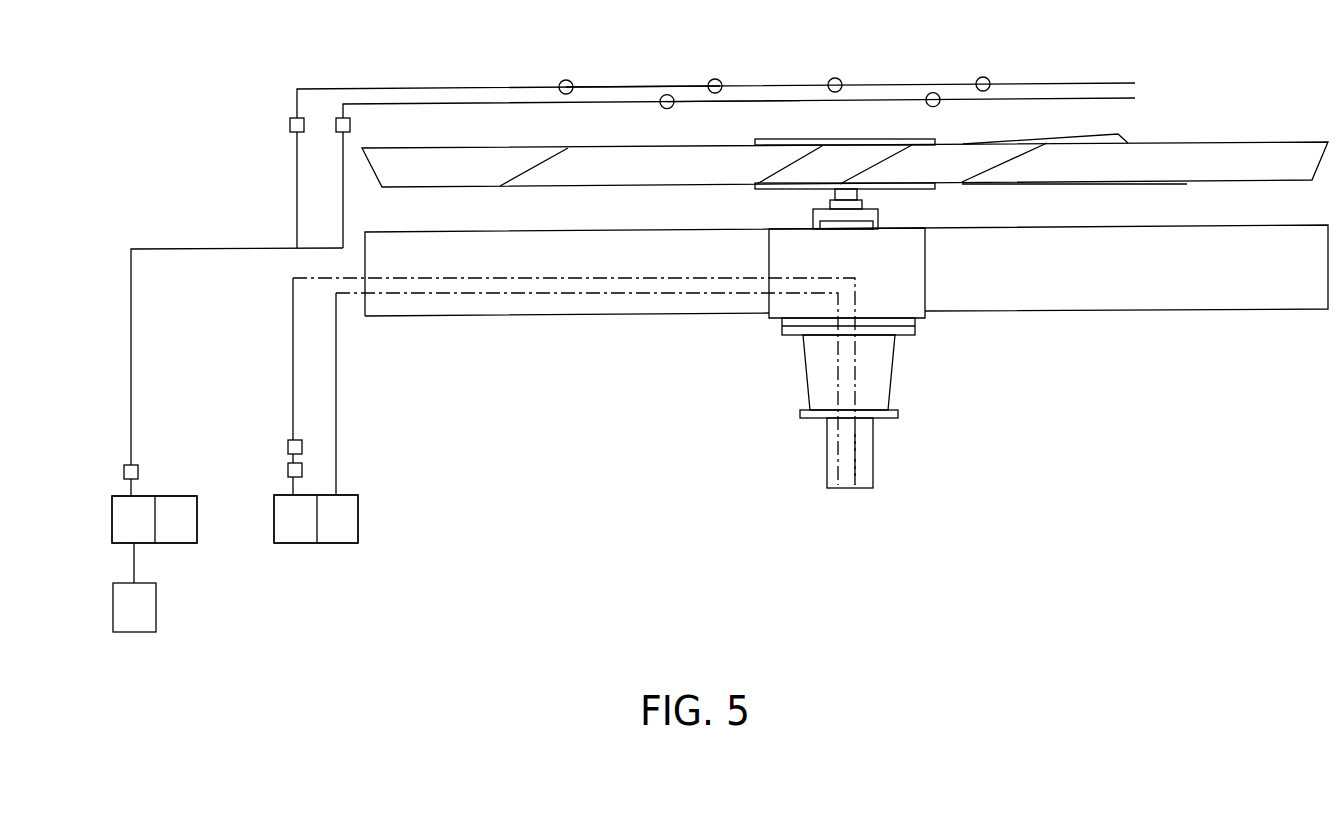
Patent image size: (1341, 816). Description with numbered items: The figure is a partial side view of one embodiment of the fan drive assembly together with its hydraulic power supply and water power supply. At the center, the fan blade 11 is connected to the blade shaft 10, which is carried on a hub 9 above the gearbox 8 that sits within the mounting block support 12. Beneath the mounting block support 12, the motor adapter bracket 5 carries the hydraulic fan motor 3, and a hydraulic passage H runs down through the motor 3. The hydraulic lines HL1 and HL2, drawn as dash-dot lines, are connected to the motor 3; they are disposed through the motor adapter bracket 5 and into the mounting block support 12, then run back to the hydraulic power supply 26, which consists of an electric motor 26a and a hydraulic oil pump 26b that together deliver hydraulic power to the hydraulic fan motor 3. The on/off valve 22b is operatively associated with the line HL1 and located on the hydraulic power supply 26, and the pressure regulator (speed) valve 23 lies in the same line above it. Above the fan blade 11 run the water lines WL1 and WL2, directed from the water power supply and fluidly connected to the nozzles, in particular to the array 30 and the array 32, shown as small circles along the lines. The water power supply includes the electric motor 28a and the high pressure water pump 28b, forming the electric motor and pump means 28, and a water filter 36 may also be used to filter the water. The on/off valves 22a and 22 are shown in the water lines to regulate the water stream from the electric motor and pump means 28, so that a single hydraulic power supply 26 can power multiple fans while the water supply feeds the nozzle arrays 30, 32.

The first water line WL1 is at (447, 88).
The second water line WL2 is at (483, 101).
The array 30 is at (600, 85).
The array 32 is at (738, 100).
The on/off valve 22a is at (290, 125).
The on/off valve 22 is at (350, 126).
The on/off valve 22b is at (303, 470).
The pressure regulator (speed) valve 23 is at (288, 445).
The fan blade 11 is at (1172, 140).
The blade shaft 10 is at (860, 192).
The hub 9 is at (813, 218).
The gearbox 8 is at (927, 278).
The mounting block support 12 is at (1098, 310).
The motor adapter bracket 5 is at (893, 375).
The hydraulic fan motor 3 is at (827, 468).
The hydraulic passage H is at (860, 460).
The hydraulic line HL1 is at (558, 293).
The hydraulic line HL2 is at (517, 296).
The electric motor and pump means 28 is at (180, 560).
The electric motor 28a is at (112, 522).
The high pressure water pump 28b is at (170, 496).
The water filter 36 is at (113, 610).
The hydraulic power supply 26 is at (347, 558).
The electric motor 26a is at (360, 512).
The hydraulic oil pump 26b is at (292, 545).